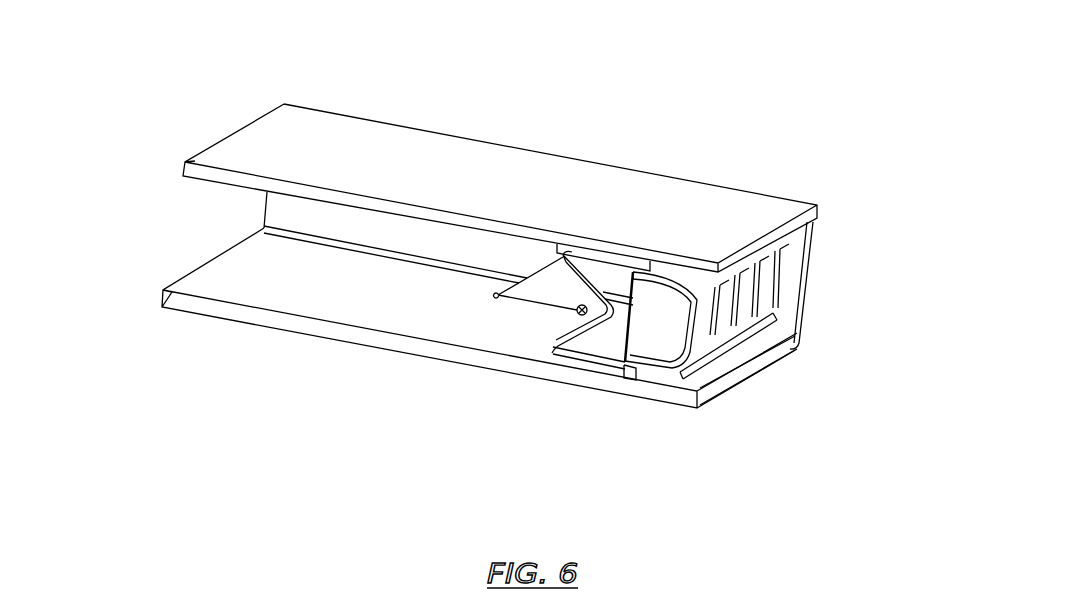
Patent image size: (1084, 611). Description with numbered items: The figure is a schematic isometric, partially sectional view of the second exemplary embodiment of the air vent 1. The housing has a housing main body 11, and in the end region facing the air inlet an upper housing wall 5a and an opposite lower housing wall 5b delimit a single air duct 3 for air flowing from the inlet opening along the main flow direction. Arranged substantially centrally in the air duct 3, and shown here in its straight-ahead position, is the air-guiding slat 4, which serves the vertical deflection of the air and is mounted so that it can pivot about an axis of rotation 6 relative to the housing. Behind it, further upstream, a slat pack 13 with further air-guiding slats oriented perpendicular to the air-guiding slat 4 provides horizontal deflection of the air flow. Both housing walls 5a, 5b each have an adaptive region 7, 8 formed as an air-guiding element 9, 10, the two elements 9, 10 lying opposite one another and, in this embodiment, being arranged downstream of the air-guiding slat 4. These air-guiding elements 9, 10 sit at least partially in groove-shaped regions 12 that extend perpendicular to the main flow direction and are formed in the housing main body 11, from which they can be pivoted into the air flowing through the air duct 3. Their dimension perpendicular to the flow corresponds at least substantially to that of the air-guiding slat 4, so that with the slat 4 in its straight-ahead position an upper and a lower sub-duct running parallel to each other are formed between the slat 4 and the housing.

The air vent 1 is at (358, 81).
The air duct 3 is at (248, 211).
The air-guiding slat 4 is at (558, 280).
The upper housing wall 5a is at (208, 175).
The lower housing wall 5b is at (228, 316).
The axis of rotation 6 is at (580, 312).
The adaptive region 7 is at (637, 295).
The adaptive region 8 is at (548, 402).
The air-guiding element 9 is at (680, 288).
The air-guiding element 10 is at (710, 383).
The housing main body 11 is at (757, 363).
The groove-shaped region 12 is at (763, 336).
The slat pack 13 is at (550, 343).